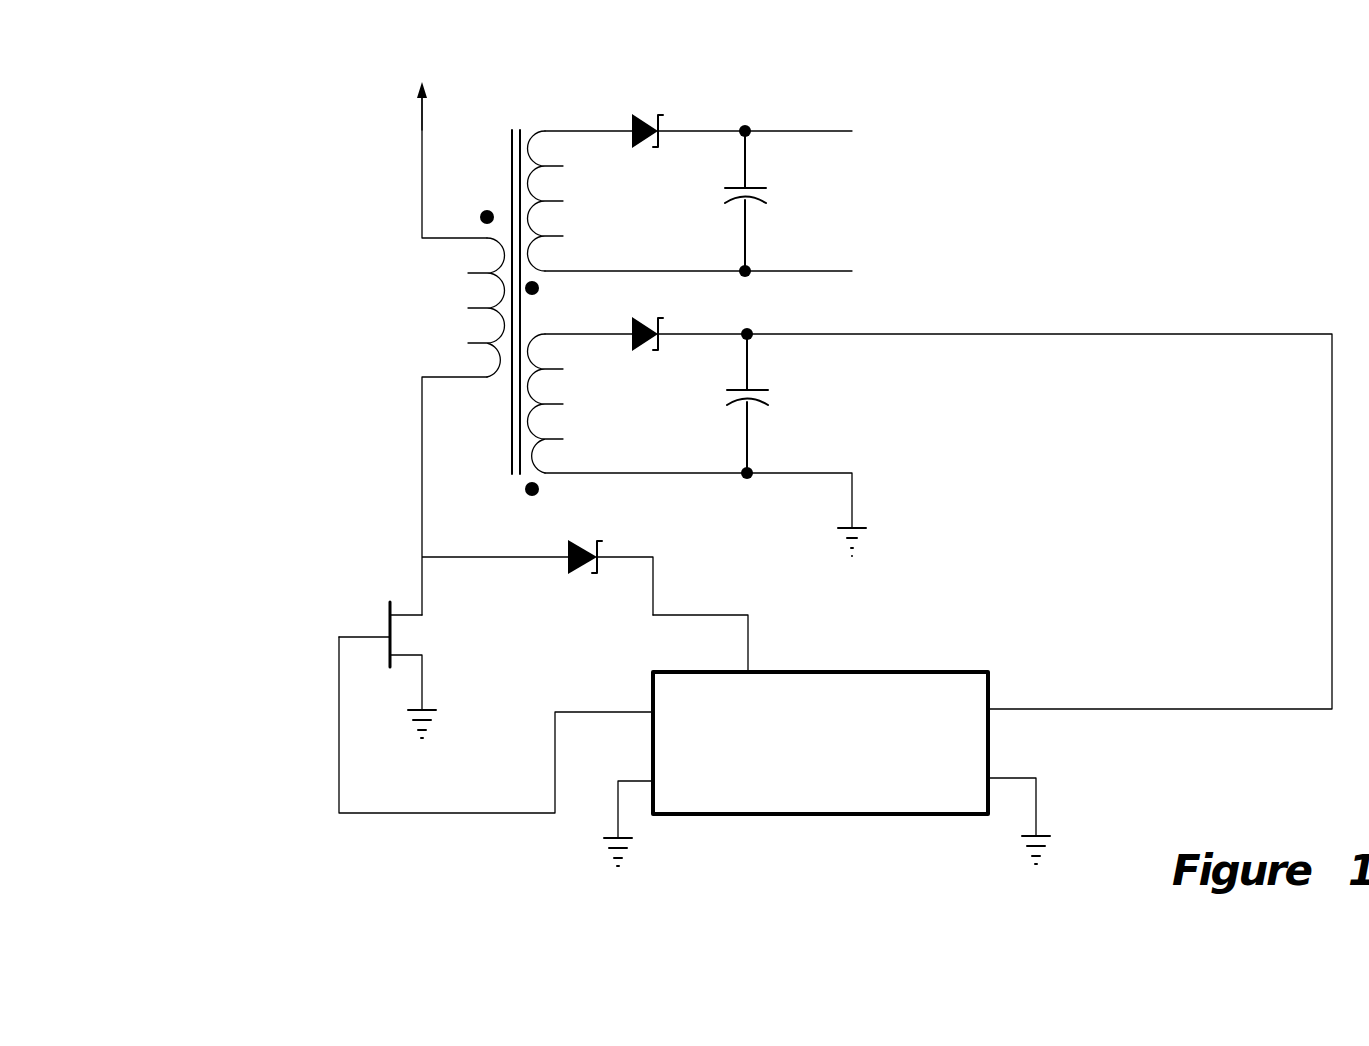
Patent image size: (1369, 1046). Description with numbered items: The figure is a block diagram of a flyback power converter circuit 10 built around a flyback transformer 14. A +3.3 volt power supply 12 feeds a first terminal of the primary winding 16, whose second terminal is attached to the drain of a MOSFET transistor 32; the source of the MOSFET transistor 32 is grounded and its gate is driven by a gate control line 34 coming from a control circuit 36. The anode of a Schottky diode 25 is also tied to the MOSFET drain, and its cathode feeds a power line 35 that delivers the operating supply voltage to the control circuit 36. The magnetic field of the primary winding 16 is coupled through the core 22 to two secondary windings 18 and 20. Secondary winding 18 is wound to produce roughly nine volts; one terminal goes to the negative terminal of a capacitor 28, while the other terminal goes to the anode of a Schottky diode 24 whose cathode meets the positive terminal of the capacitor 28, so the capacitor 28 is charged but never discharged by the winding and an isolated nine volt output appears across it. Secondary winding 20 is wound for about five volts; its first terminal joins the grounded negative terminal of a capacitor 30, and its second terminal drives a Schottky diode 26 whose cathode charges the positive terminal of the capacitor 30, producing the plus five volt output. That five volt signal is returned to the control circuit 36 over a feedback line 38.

The power converter circuit 10 is at (224, 744).
The +3.3 volt power supply 12 is at (422, 126).
The flyback transformer 14 is at (534, 70).
The primary winding 16 is at (462, 288).
The secondary winding 18 is at (574, 197).
The secondary winding 20 is at (570, 413).
The core 22 is at (512, 415).
The Schottky diode 24 is at (646, 112).
The Schottky diode 25 is at (568, 547).
The Schottky diode 26 is at (654, 318).
The capacitor 28 is at (728, 182).
The capacitor 30 is at (733, 383).
The MOSFET transistor 32 is at (392, 628).
The gate control line 34 is at (496, 814).
The power line 35 is at (662, 617).
The control circuit 36 is at (948, 672).
The feedback line 38 is at (1172, 709).